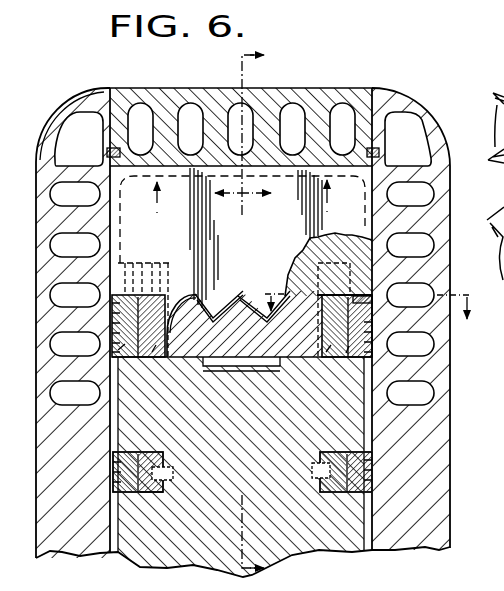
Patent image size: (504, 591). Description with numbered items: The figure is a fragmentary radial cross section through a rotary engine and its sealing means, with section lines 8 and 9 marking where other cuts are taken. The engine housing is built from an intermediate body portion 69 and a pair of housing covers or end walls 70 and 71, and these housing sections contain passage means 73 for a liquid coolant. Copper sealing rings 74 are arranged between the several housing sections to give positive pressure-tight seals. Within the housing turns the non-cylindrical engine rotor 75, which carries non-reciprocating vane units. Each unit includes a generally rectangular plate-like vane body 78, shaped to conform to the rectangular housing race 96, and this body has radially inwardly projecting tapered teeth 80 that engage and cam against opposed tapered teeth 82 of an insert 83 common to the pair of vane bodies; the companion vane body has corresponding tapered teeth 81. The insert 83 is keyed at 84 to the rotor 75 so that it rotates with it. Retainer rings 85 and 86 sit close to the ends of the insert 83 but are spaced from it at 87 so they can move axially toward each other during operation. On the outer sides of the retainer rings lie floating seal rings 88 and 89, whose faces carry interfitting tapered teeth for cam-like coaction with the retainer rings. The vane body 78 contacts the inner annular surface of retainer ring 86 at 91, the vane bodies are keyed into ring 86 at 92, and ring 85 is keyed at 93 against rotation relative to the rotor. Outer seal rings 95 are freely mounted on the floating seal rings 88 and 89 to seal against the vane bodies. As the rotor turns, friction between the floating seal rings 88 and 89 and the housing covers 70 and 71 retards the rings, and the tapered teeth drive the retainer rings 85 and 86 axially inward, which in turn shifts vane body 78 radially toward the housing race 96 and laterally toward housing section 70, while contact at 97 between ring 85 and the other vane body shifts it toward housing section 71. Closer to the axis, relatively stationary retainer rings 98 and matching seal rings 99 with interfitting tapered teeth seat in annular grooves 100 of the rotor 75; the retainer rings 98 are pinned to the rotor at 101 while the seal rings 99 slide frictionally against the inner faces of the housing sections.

The section line 8- 8 is at (262, 307).
The section line 9- 9 is at (365, 294).
The intermediate body portion 69 is at (270, 100).
The housing cover 70 is at (60, 445).
The housing cover 71 is at (437, 445).
The passage means 73 is at (294, 117).
The copper sealing ring 74 is at (108, 152).
The engine rotor 75 is at (293, 503).
The vane body 78 is at (218, 215).
The tapered tooth 80 is at (244, 324).
The tapered tooth 81 is at (286, 313).
The tapered tooth 82 is at (241, 303).
The insert 83 is at (226, 345).
The key 84 is at (208, 367).
The retainer ring 85 is at (157, 347).
The retainer ring 86 is at (332, 349).
The spacing 87 is at (184, 297).
The floating seal ring 88 is at (117, 358).
The floating seal ring 89 is at (356, 341).
The contact point 91 is at (323, 313).
The key 92 is at (333, 262).
The key 93 is at (153, 280).
The outer seal ring 95 is at (113, 298).
The housing race 96 is at (213, 166).
The contact point 97 is at (147, 321).
The retainer ring 98 is at (158, 492).
The seal ring 99 is at (125, 492).
The annular groove 100 is at (144, 453).
The pin 101 is at (173, 481).